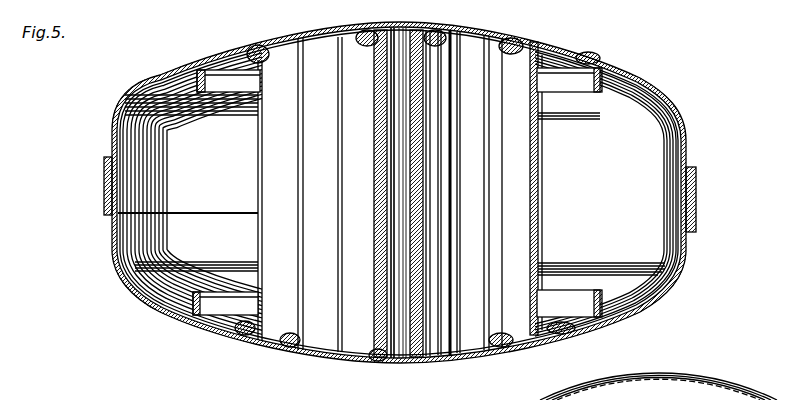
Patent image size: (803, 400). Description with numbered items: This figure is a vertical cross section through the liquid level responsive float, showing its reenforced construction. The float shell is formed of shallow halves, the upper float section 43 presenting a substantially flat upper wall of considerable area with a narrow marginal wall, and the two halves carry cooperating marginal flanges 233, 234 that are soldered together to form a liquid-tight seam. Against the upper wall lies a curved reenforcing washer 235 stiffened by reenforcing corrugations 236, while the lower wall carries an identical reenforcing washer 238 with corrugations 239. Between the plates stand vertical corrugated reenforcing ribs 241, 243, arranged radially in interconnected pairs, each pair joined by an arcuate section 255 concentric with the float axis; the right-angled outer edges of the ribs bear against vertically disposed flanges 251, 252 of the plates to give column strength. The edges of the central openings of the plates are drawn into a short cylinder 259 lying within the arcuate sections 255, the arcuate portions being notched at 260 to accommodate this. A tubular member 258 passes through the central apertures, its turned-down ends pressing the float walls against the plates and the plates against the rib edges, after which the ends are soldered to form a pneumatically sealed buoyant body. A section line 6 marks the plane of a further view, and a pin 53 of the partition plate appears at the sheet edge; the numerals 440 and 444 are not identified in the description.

The upper float section 43 is at (411, 192).
The marginal flange 233 is at (670, 198).
The marginal flange 234 is at (690, 197).
The vertical reenforcing rib 241 is at (270, 158).
The arcuate section 255 is at (374, 176).
The short cylinder 259 is at (428, 17).
The tubular member 258 is at (408, 201).
The notch 260 is at (372, 31).
The reenforcing corrugation 236 is at (552, 56).
The vertical reenforcing rib 243 is at (532, 158).
The reenforcing washer 235 is at (584, 97).
The vertically disposed flange 252 is at (597, 93).
The bead 440 is at (586, 57).
The lower laminations 444 is at (630, 302).
The vertically disposed flange 251 is at (617, 315).
The reenforcing washer 238 is at (573, 329).
The corrugation 239 is at (557, 337).
The section line 6 is at (100, 140).
The pin 53 is at (203, 392).